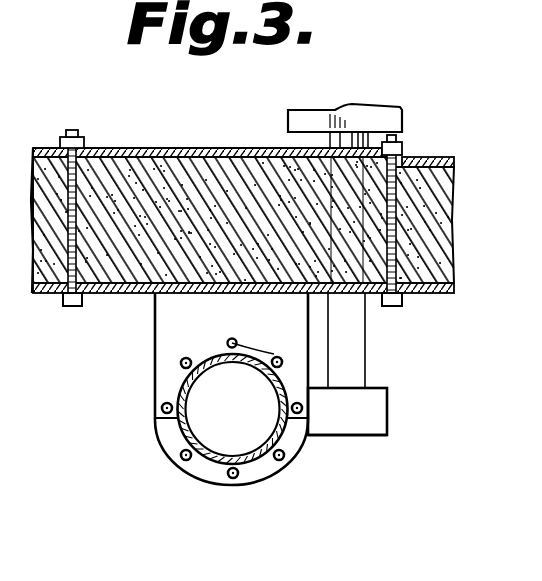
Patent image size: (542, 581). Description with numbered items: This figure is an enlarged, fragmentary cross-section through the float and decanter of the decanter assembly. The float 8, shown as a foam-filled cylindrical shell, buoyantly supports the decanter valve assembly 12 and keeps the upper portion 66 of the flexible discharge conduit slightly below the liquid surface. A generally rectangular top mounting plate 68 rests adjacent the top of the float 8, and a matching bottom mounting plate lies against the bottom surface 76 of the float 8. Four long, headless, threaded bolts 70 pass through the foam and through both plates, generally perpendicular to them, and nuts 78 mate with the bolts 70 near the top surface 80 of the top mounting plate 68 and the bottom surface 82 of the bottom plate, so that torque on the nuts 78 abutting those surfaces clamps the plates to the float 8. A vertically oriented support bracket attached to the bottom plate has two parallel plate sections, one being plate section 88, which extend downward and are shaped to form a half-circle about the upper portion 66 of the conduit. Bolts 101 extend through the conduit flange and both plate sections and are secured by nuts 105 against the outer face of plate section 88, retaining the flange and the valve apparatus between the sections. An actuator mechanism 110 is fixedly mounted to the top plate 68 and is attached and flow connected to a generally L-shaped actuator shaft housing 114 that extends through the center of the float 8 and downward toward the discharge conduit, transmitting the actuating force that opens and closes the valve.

The float 8 is at (455, 197).
The decanter valve assembly 12 is at (455, 340).
The upper portion of the discharge conduit 66 is at (185, 436).
The top mounting plate 68 is at (196, 148).
The threaded bolts 70 is at (78, 243).
The bottom surface of the float 76 is at (51, 294).
The nuts 78 is at (76, 136).
The top surface of the top mounting plate 80 is at (137, 148).
The bottom surface of the bottom mounting plate 82 is at (403, 298).
The plate section 88 is at (157, 363).
The bolts 101 is at (277, 357).
The nuts 105 is at (230, 340).
The actuator mechanism 110 is at (376, 116).
The actuator shaft housing 114 is at (353, 360).